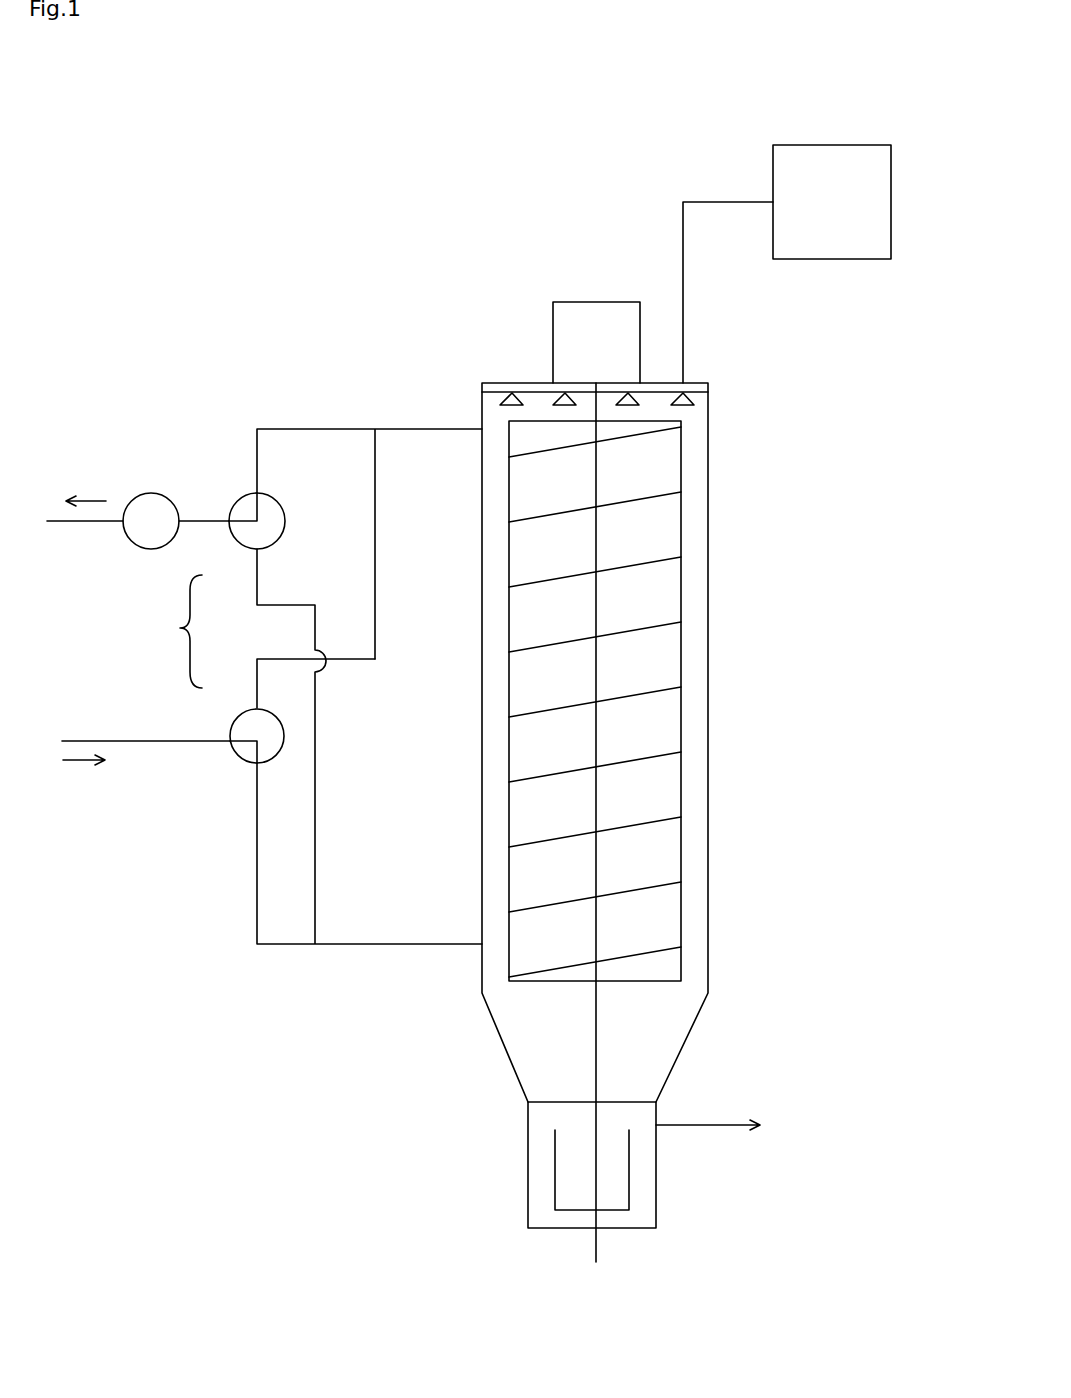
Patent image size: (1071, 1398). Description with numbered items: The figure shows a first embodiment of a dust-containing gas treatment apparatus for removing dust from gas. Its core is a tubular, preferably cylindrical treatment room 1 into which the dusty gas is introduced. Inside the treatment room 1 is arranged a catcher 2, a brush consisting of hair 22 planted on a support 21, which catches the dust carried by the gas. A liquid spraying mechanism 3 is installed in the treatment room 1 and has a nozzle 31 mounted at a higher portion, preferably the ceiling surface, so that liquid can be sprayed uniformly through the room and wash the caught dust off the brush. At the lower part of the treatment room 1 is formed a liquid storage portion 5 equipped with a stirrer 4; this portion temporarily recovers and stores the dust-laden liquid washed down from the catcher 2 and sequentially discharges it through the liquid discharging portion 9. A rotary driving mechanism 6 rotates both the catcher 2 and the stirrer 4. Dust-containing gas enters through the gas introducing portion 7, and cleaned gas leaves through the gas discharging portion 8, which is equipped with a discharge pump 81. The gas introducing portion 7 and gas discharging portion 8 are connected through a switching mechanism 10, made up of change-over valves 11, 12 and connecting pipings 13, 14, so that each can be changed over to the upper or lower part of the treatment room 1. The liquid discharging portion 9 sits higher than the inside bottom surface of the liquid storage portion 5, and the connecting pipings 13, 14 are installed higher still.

The treatment room 1 is at (708, 540).
The catcher 2 is at (695, 466).
The support 21 is at (600, 668).
The hair 22 is at (647, 693).
The liquid spraying mechanism 3 is at (891, 190).
The nozzle 31 is at (688, 396).
The stirrer 4 is at (629, 1193).
The liquid storage portion 5 is at (528, 1167).
The rotary driving mechanism 6 is at (578, 302).
The gas introducing portion 7 is at (118, 741).
The gas discharging portion 8 is at (98, 521).
The discharge pump 81 is at (153, 498).
The liquid discharging portion 9 is at (714, 1110).
The switching mechanism 10 is at (174, 631).
The change-over valve 11 is at (246, 725).
The change-over valve 12 is at (243, 528).
The connecting piping 13 is at (421, 944).
The connecting piping 14 is at (420, 429).